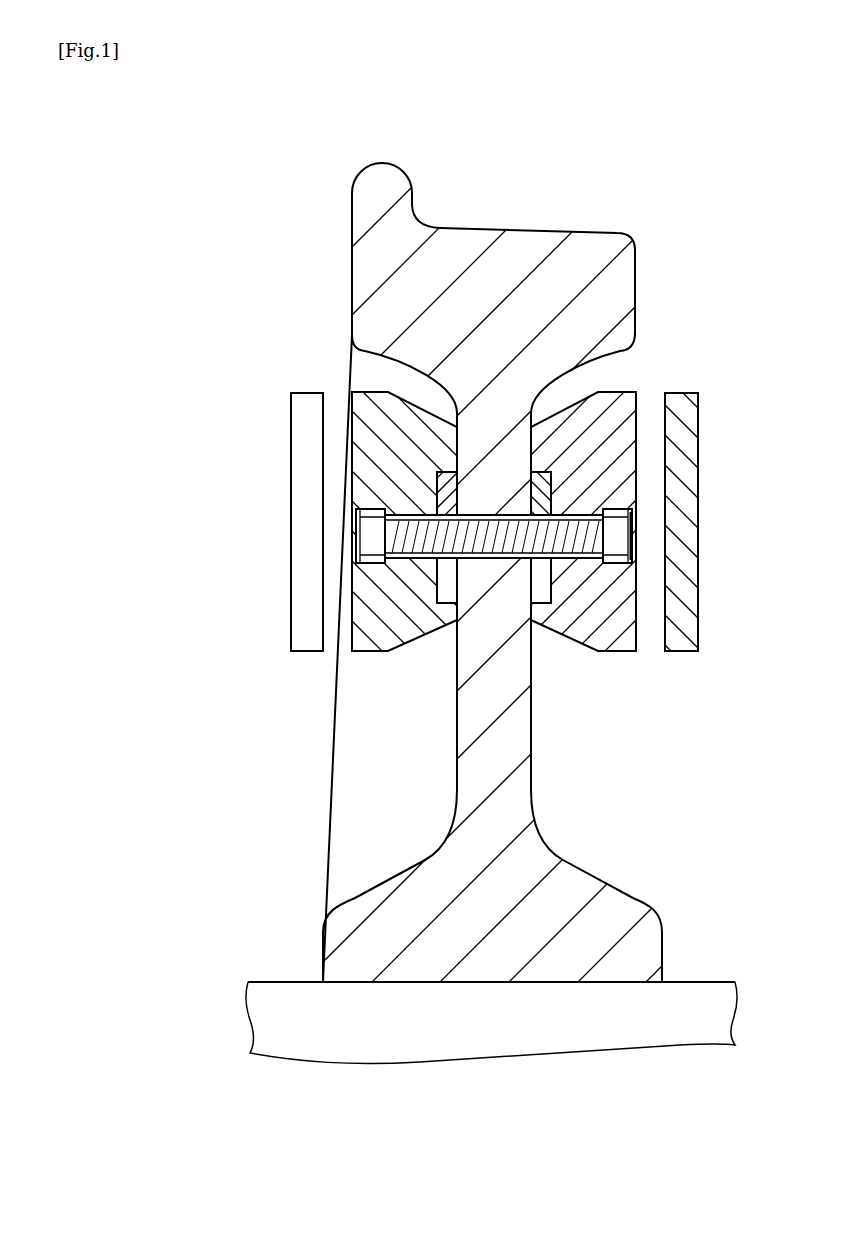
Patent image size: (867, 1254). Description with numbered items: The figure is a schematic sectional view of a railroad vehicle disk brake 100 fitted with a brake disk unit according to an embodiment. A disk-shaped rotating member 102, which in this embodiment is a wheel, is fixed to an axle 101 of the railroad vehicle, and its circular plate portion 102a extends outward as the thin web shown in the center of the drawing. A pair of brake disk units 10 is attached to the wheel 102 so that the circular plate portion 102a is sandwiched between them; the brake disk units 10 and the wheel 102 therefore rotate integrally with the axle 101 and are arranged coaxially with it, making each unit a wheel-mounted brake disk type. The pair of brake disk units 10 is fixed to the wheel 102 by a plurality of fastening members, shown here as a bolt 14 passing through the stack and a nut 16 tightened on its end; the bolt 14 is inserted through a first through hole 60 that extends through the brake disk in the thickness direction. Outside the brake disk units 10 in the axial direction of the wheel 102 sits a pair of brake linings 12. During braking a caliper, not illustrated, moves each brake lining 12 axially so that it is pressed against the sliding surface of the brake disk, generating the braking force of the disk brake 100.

The railroad vehicle disk brake 100 is at (474, 549).
The brake disk unit 10 is at (474, 650).
The brake lining 12 is at (300, 468).
The bolt 14 is at (363, 535).
The nut 16 is at (638, 560).
The first through hole 60 is at (368, 522).
The axle 101 is at (704, 998).
The rotating member 102 is at (541, 243).
The circular plate portion 102a is at (517, 718).